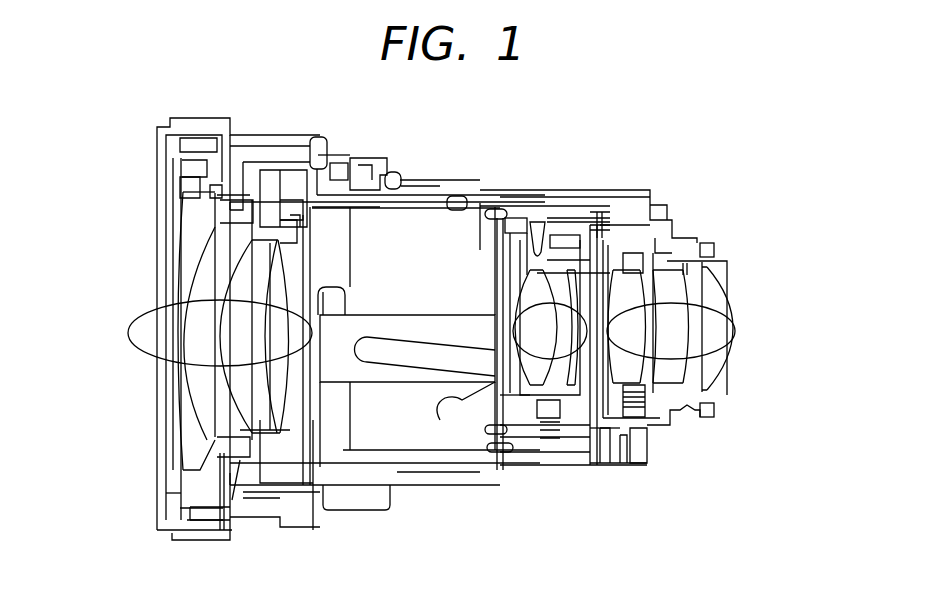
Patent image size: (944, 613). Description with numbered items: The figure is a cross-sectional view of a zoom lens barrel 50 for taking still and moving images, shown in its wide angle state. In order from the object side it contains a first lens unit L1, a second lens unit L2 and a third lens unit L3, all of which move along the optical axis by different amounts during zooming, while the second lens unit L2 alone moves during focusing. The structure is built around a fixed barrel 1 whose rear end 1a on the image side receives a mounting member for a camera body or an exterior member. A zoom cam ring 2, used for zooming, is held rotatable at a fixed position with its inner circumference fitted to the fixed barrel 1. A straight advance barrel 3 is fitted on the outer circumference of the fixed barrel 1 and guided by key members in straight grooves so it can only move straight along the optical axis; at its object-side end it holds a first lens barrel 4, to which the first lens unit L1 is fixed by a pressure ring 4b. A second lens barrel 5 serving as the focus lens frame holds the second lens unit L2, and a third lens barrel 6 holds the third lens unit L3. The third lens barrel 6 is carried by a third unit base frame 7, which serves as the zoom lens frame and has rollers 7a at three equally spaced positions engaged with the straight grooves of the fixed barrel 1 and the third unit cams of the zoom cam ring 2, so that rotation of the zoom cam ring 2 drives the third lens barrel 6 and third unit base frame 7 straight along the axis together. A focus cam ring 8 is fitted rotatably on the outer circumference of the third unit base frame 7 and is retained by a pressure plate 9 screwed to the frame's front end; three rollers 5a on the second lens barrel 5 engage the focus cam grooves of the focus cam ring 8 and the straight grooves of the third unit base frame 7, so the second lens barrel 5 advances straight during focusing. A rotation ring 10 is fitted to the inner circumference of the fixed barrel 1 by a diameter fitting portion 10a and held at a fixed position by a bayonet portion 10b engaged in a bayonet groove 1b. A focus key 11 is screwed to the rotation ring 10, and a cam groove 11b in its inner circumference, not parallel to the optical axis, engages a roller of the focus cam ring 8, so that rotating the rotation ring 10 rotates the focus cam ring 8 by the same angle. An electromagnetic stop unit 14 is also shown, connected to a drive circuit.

The fixed barrel 1 is at (637, 190).
The rear end 1a is at (657, 205).
The bayonet groove 1b is at (318, 178).
The zoom cam ring 2 is at (578, 197).
The straight advance barrel 3 is at (270, 143).
The first lens barrel 4 is at (177, 148).
The pressure ring 4b is at (187, 187).
The second lens barrel 5 is at (552, 420).
The rollers 5a is at (537, 222).
The third lens barrel 6 is at (640, 418).
The third unit base frame 7 is at (622, 440).
The rollers 7a is at (596, 440).
The focus cam ring 8 is at (514, 218).
The pressure plate 9 is at (496, 210).
The rotation ring 10 is at (358, 165).
The diameter fitting portion 10a is at (392, 176).
The bayonet portion 10b is at (338, 162).
The focus key 11 is at (418, 378).
The cam groove 11b is at (450, 357).
The electromagnetic stop unit 14 is at (513, 432).
The zoom lens barrel 50 is at (714, 158).
The first lens unit L1 is at (128, 320).
The second lens unit L2 is at (530, 320).
The third lens unit L3 is at (720, 304).